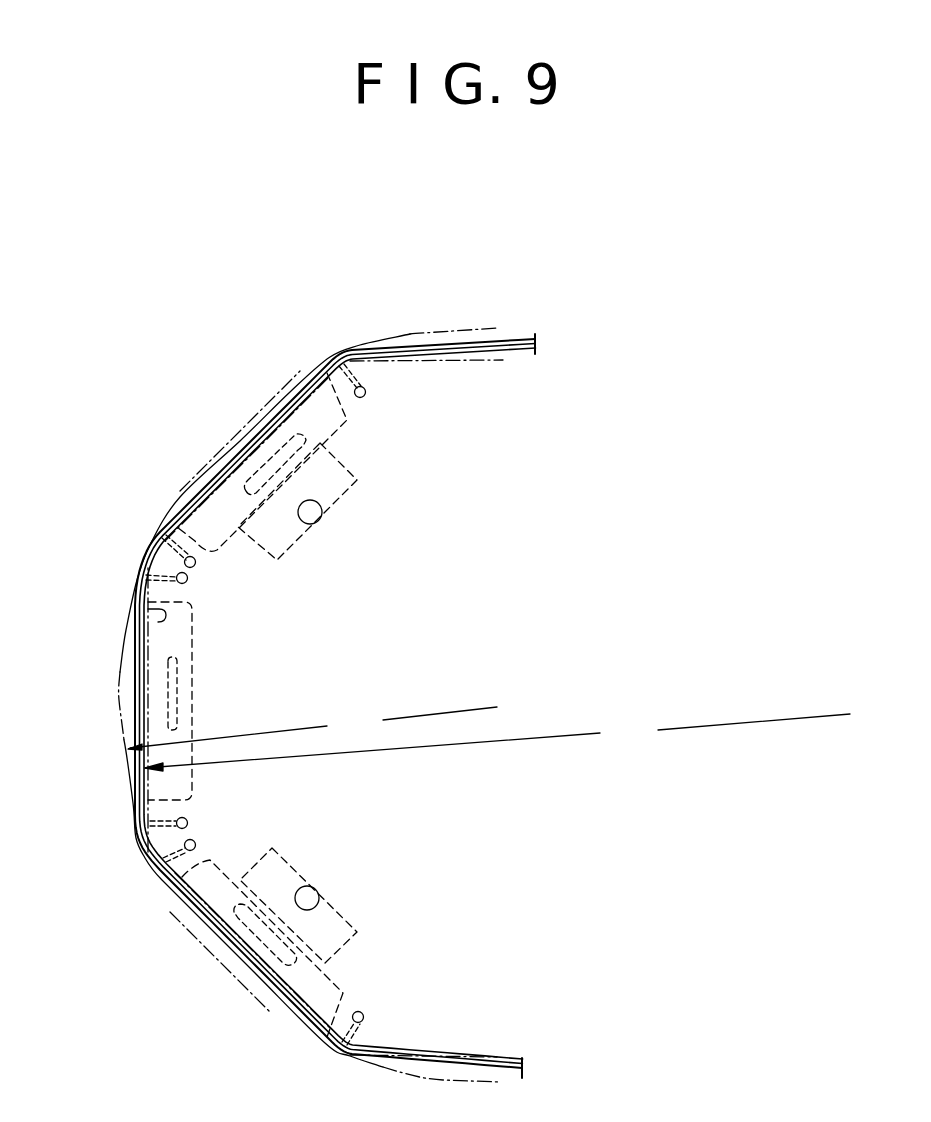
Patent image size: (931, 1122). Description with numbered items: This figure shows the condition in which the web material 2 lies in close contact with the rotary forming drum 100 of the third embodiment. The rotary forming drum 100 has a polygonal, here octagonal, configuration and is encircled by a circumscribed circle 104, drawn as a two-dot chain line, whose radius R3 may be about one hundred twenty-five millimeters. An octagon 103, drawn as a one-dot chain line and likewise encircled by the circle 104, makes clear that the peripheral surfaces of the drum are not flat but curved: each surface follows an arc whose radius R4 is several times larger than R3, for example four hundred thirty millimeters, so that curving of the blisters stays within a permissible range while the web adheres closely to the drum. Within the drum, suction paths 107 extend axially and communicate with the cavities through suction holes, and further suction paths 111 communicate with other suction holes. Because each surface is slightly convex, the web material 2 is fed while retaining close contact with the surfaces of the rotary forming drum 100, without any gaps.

The web material 2 is at (132, 670).
The rotary forming drum 100 is at (515, 393).
The octagon 103 is at (150, 611).
The circumscribed circle 104 is at (118, 727).
The suction paths 107 is at (317, 513).
The suction paths 111 is at (366, 394).
The radius of circumscribed circle R3 is at (312, 728).
The radius of peripheral surface arc R4 is at (497, 742).